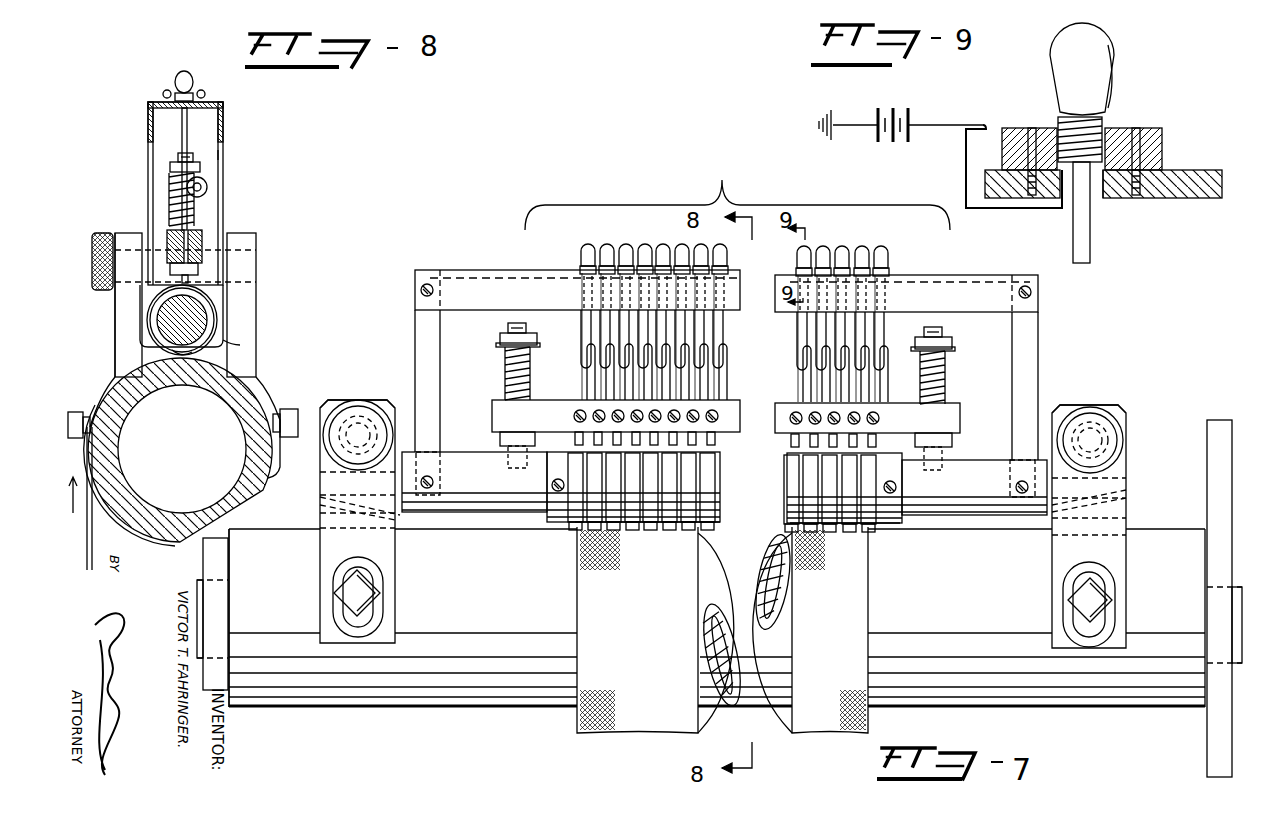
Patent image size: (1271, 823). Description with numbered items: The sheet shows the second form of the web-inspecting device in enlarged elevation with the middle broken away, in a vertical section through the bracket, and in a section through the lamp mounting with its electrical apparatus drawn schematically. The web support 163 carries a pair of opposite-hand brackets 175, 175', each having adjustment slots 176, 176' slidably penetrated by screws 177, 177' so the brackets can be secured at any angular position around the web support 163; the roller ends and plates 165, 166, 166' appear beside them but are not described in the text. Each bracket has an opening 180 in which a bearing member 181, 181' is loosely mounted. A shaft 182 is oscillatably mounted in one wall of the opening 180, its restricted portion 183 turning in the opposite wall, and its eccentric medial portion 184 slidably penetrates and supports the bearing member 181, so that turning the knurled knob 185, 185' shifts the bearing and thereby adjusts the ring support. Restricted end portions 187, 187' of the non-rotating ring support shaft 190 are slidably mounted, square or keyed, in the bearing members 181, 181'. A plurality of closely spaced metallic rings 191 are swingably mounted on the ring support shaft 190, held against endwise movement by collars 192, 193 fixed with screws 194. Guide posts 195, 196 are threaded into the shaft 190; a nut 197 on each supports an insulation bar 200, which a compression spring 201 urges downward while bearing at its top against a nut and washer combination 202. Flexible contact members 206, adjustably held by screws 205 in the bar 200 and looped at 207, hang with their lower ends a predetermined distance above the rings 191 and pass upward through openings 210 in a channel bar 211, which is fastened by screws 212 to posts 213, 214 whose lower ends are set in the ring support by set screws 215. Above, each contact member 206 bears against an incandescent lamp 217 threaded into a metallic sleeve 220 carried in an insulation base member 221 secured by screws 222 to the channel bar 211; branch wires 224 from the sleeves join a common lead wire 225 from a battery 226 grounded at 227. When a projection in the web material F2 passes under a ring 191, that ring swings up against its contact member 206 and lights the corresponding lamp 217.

In FIG. 8, the web support 163 is at (120, 470).
In FIG. 7, the web support 163 is at (435, 712).
In FIG. 8, the roller shaft 165 is at (110, 342).
In FIG. 7, the roller shaft 165 is at (362, 712).
In FIG. 7, the end plate 166 is at (231, 614).
In FIG. 7, the end plate 166' is at (1202, 598).
In FIG. 8, the bracket 175 is at (191, 412).
In FIG. 7, the bracket 175 is at (377, 521).
In FIG. 7, the bracket 175' is at (1109, 526).
In FIG. 7, the adjustment slot 176 is at (354, 587).
In FIG. 7, the adjustment slot 176' is at (1086, 592).
In FIG. 8, the screw 177 is at (185, 408).
In FIG. 7, the screw 177 is at (381, 593).
In FIG. 7, the screw 177' is at (1117, 600).
In FIG. 8, the opening 180 is at (241, 344).
In FIG. 8, the bearing member 181 is at (242, 292).
In FIG. 7, the bearing member 181 is at (357, 393).
In FIG. 7, the bearing member 181' is at (1111, 406).
In FIG. 8, the shaft 182 is at (127, 238).
In FIG. 8, the restricted portion 183 is at (258, 248).
In FIG. 8, the eccentric medial portion 184 is at (258, 285).
In FIG. 8, the knurled knob 185 is at (87, 250).
In FIG. 7, the knurled knob 185 is at (358, 424).
In FIG. 7, the knurled knob 185' is at (1091, 427).
In FIG. 7, the restricted end portion 187 is at (342, 500).
In FIG. 7, the restricted end portion 187' is at (1116, 486).
In FIG. 8, the ring support shaft 190 is at (214, 308).
In FIG. 7, the ring support shaft 190 is at (724, 514).
In FIG. 8, the metallic ring 191 is at (195, 354).
In FIG. 7, the metallic ring 191 is at (576, 530).
In FIG. 8, the collar 192 is at (155, 322).
In FIG. 7, the collar 192 is at (548, 476).
In FIG. 7, the collar 193 is at (900, 515).
In FIG. 7, the screw 194 is at (552, 490).
In FIG. 8, the guide post 195 is at (177, 156).
In FIG. 7, the guide post 195 is at (507, 326).
In FIG. 7, the guide post 196 is at (943, 330).
In FIG. 8, the nut 197 is at (198, 270).
In FIG. 7, the nut 197 is at (500, 440).
In FIG. 8, the insulation bar 200 is at (167, 255).
In FIG. 7, the insulation bar 200 is at (492, 410).
In FIG. 8, the compression spring 201 is at (168, 190).
In FIG. 7, the compression spring 201 is at (504, 375).
In FIG. 8, the nut and washer combination 202 is at (200, 167).
In FIG. 7, the nut and washer combination 202 is at (499, 339).
In FIG. 7, the screw 205 is at (573, 416).
In FIG. 8, the flexible contact member 206 is at (188, 147).
In FIG. 9, the flexible contact member 206 is at (1091, 226).
In FIG. 7, the flexible contact member 206 is at (580, 385).
In FIG. 8, the loop 207 is at (207, 187).
In FIG. 7, the loop 207 is at (580, 358).
In FIG. 9, the opening 210 is at (1104, 198).
In FIG. 8, the channel bar 211 is at (224, 120).
In FIG. 9, the channel bar 211 is at (1010, 198).
In FIG. 7, the channel bar 211 is at (458, 272).
In FIG. 7, the screw 212 is at (434, 290).
In FIG. 8, the post 213 is at (220, 153).
In FIG. 7, the post 213 is at (414, 352).
In FIG. 7, the post 214 is at (1038, 378).
In FIG. 7, the set screw 215 is at (434, 480).
In FIG. 8, the incandescent lamp 217 is at (192, 90).
In FIG. 9, the incandescent lamp 217 is at (1112, 70).
In FIG. 7, the incandescent lamp 217 is at (655, 240).
In FIG. 9, the metallic sleeve 220 is at (1058, 106).
In FIG. 8, the insulation base member 221 is at (206, 102).
In FIG. 9, the insulation base member 221 is at (1002, 142).
In FIG. 8, the screw 222 is at (165, 92).
In FIG. 9, the screw 222 is at (1040, 110).
In FIG. 9, the branch wire 224 is at (963, 166).
In FIG. 9, the lead wire 225 is at (947, 125).
In FIG. 9, the battery 226 is at (907, 112).
In FIG. 9, the ground 227 is at (831, 112).
In FIG. 8, the web material F2 is at (92, 528).
In FIG. 7, the web material F2 is at (577, 598).